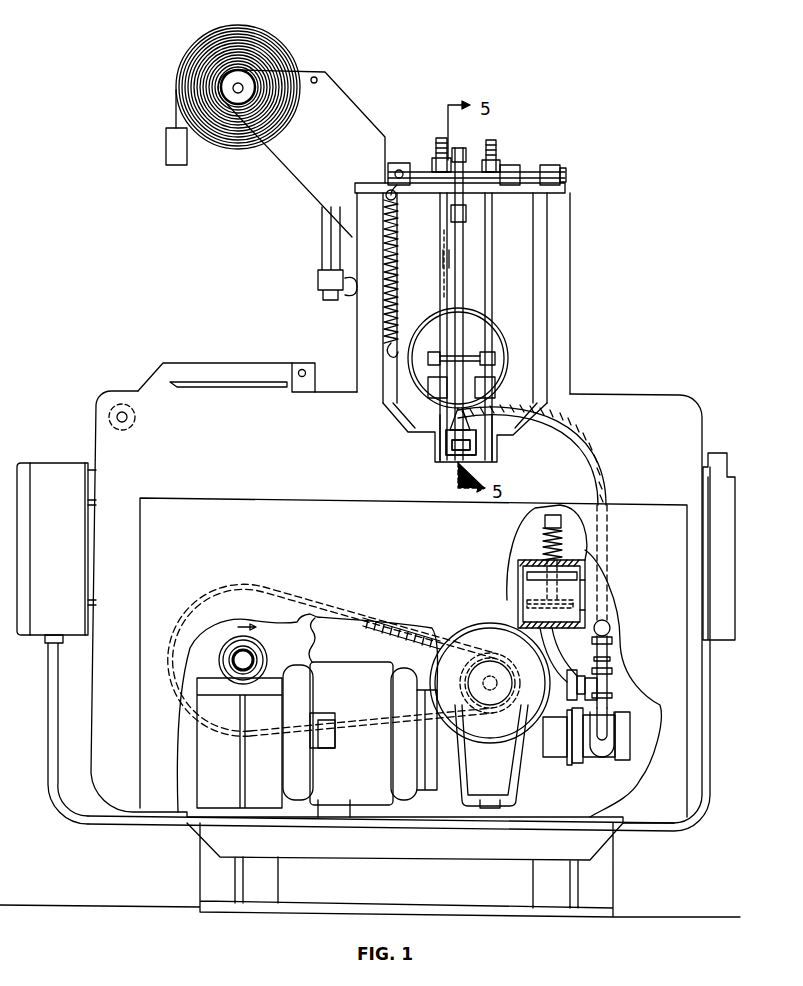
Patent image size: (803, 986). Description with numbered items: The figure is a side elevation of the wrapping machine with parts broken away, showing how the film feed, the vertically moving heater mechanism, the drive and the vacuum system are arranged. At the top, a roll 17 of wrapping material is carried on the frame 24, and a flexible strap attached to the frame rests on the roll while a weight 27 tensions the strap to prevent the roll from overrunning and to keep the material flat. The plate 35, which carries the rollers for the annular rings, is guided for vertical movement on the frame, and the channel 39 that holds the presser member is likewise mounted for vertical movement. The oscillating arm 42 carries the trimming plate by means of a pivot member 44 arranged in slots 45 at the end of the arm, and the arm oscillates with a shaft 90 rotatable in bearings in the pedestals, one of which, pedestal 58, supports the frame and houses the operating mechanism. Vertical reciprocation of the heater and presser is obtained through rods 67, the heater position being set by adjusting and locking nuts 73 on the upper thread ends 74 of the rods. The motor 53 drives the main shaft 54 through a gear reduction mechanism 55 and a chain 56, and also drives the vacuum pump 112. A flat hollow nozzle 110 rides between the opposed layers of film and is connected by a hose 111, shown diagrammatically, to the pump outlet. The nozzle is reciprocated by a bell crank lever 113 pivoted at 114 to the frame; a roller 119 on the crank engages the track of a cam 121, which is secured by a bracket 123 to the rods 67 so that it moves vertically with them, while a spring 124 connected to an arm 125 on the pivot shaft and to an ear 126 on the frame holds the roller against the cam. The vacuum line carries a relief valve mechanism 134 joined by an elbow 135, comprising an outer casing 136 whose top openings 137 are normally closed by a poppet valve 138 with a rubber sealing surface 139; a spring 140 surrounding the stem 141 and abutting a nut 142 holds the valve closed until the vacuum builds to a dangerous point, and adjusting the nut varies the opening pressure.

The roll of wrapping material 17 is at (213, 45).
The frame 24 is at (345, 103).
The weight 27 is at (166, 145).
The plate 35 is at (524, 292).
The channel 39 is at (495, 381).
The oscillating arm 42 is at (185, 362).
The pivot member 44 is at (298, 370).
The slots 45 is at (302, 372).
The motor 53 is at (350, 673).
The shaft 54 is at (247, 660).
The gear reduction mechanism 55 is at (502, 765).
The chain 56 is at (405, 627).
The pedestal 58 is at (675, 405).
The rods 67 is at (438, 234).
The adjusting and locking nuts 73 is at (498, 165).
The upper thread ends 74 is at (493, 141).
The shaft 90 is at (110, 414).
The nozzle 110 is at (450, 438).
The hose 111 is at (605, 606).
The vacuum pump 112 is at (605, 725).
The bell crank lever 113 is at (463, 245).
The pivot 114 is at (538, 178).
The roller 119 is at (452, 208).
The cam 121 is at (440, 258).
The bracket 123 is at (495, 360).
The spring 124 is at (385, 320).
The arm 125 is at (396, 165).
The ear 126 is at (387, 352).
The relief valve mechanism 134 is at (445, 640).
The elbow 135 is at (560, 660).
The outer casing 136 is at (590, 580).
The openings 137 is at (587, 565).
The poppet valve 138 is at (535, 600).
The rubber sealing surface 139 is at (527, 575).
The spring 140 is at (545, 540).
The stem 141 is at (545, 556).
The nut 142 is at (572, 468).